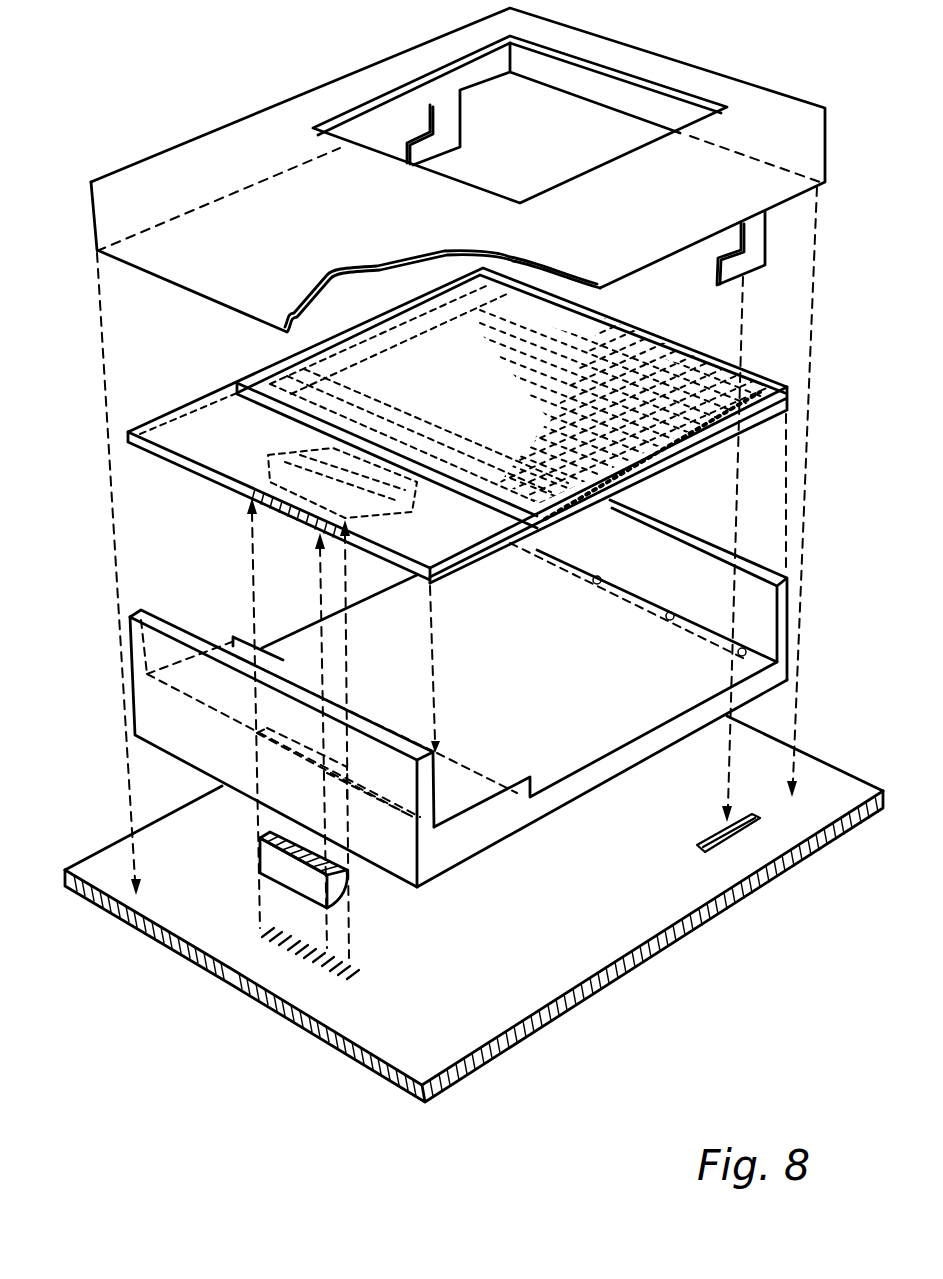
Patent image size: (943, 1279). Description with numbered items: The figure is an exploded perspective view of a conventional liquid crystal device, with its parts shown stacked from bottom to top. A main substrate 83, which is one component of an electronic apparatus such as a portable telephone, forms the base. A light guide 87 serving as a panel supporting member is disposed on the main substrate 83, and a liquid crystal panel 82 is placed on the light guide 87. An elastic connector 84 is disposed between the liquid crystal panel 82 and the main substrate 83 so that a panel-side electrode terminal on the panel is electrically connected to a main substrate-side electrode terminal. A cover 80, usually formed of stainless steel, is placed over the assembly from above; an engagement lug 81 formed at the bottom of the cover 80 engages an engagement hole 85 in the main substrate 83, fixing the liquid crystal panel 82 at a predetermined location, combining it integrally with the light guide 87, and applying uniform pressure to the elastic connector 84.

The cover 80 is at (230, 137).
The engagement lug 81 is at (752, 254).
The liquid crystal panel 82 is at (230, 362).
The main substrate 83 is at (603, 945).
The elastic connector 84 is at (290, 873).
The engagement hole 85 is at (717, 832).
The light guide 87 is at (507, 693).